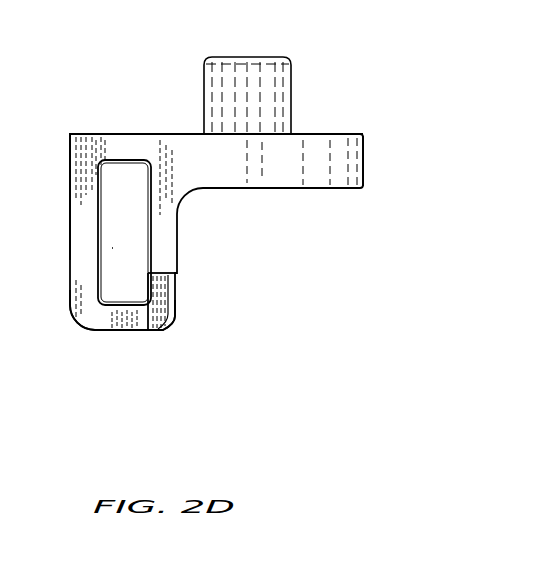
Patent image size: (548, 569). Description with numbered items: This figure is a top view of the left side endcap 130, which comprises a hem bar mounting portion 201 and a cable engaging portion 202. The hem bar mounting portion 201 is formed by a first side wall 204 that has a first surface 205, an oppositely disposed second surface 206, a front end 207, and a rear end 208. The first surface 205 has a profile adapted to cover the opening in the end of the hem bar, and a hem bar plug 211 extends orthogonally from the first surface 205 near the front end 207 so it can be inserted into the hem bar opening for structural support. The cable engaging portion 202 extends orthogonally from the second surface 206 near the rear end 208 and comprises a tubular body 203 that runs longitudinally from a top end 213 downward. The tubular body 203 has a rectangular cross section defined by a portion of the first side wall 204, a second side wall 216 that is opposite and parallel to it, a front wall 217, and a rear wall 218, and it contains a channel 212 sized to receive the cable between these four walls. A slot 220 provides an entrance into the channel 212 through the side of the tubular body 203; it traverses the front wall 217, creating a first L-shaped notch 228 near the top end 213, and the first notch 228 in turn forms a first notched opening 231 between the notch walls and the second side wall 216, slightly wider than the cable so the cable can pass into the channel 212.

The endcap 130 is at (205, 18).
The hem bar mounting portion 201 is at (340, 134).
The cable engaging portion 202 is at (75, 308).
The tubular body 203 is at (124, 156).
The first side wall 204 is at (318, 178).
The first surface 205 is at (197, 134).
The second surface 206 is at (243, 190).
The front end 207 is at (364, 153).
The rear end 208 is at (68, 147).
The hem bar plug 211 is at (242, 57).
The channel 212 is at (112, 248).
The top end 213 is at (85, 228).
The second side wall 216 is at (118, 332).
The front wall 217 is at (177, 257).
The rear wall 218 is at (68, 193).
The slot 220 is at (158, 333).
The first L-shaped notch 228 is at (170, 284).
The first notched opening 231 is at (166, 314).